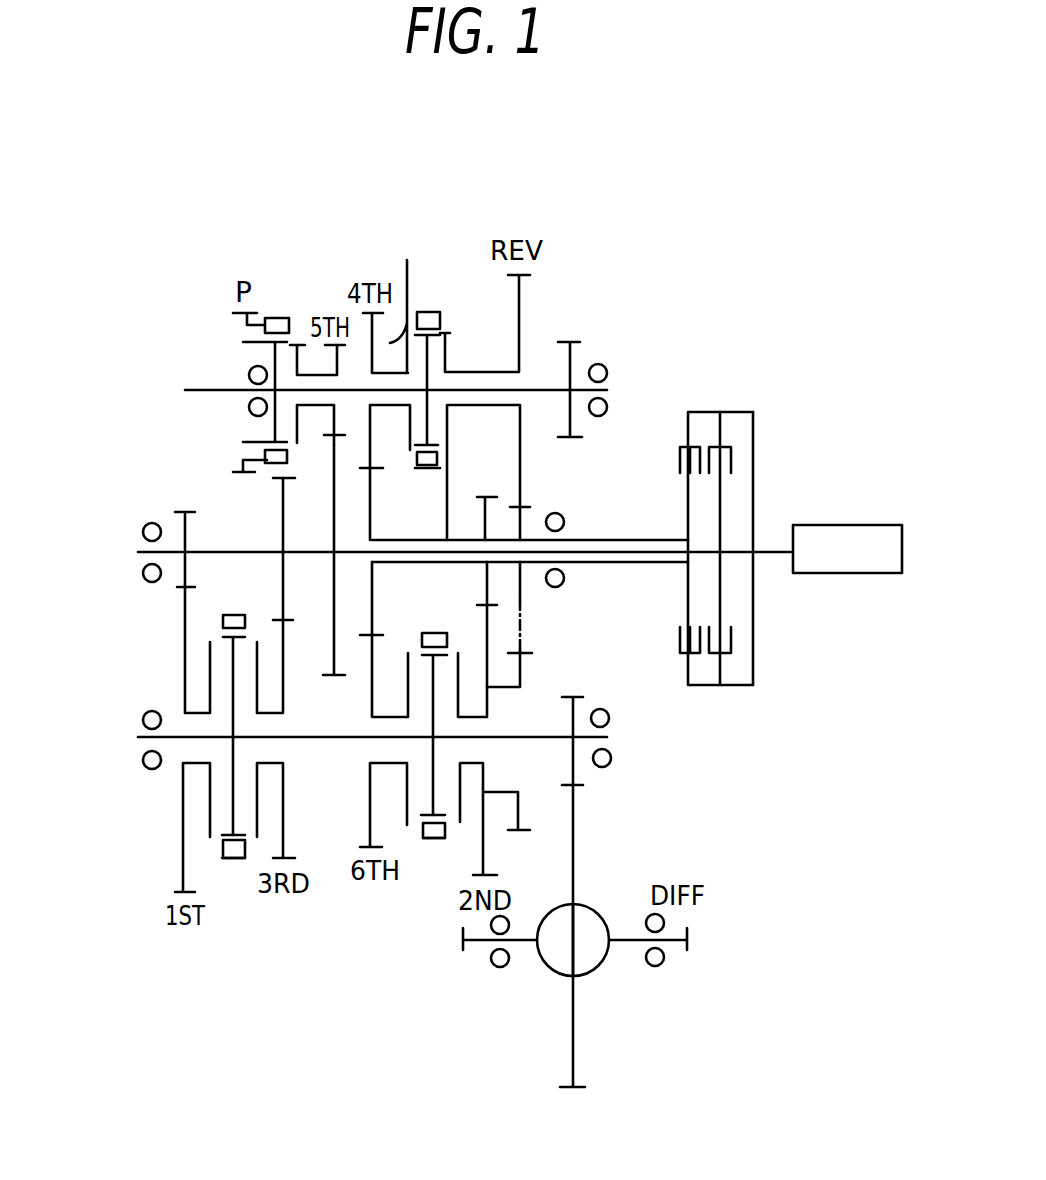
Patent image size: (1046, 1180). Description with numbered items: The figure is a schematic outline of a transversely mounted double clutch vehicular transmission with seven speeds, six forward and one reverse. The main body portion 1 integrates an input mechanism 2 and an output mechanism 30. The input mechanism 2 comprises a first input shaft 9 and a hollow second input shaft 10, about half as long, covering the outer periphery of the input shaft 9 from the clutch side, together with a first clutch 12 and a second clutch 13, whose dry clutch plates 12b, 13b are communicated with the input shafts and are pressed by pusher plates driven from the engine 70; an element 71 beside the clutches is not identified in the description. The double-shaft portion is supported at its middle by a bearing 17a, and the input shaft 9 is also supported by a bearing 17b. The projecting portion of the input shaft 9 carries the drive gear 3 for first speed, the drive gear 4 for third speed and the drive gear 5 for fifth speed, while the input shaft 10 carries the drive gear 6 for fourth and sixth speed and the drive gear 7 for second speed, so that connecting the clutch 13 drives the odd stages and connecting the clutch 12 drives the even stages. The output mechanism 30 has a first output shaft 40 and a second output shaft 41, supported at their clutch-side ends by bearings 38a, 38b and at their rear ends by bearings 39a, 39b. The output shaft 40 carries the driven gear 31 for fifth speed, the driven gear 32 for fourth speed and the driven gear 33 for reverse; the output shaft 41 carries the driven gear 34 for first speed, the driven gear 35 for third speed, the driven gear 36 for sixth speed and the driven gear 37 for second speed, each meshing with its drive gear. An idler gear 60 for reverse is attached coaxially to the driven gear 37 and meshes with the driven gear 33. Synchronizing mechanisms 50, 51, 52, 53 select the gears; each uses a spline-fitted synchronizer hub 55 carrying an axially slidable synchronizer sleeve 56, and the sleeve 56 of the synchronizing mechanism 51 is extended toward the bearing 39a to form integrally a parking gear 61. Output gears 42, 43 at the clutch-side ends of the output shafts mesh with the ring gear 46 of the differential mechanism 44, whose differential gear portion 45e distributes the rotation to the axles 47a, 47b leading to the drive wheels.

The main body portion 1 is at (133, 342).
The input mechanism 2 is at (695, 380).
The drive gear for 1st speed 3 is at (185, 578).
The drive gear for 3rd speed 4 is at (283, 568).
The drive gear for 5th speed 5 is at (334, 633).
The drive gear for 4th speed and 6th speed 6 is at (380, 498).
The drive gear for 2nd speed 7 is at (485, 523).
The input shaft 9 is at (258, 550).
The input shaft 10 is at (455, 537).
The clutch 12 is at (675, 447).
The clutch plate 12b is at (688, 507).
The clutch 13 is at (735, 435).
The clutch plate 13b is at (723, 520).
The bearing 17a is at (562, 512).
The bearing 17b is at (142, 532).
The output mechanism 30 is at (218, 261).
The driven gear for 5th speed 31 is at (330, 415).
The driven gear for 4th speed 32 is at (392, 299).
The driven gear for reverse 33 is at (523, 297).
The driven gear for 1st speed 34 is at (183, 850).
The driven gear for 3rd speed 35 is at (287, 795).
The driven gear for 6th speed 36 is at (368, 814).
The driven gear for 2nd speed 37 is at (488, 848).
The bearing 38a is at (608, 370).
The bearing 38b is at (607, 768).
The bearing 39a is at (246, 375).
The bearing 39b is at (148, 770).
The output shaft 40 is at (555, 387).
The output shaft 41 is at (557, 737).
The output gear 42 is at (577, 352).
The output gear 43 is at (577, 700).
The differential mechanism 44 is at (545, 977).
The differential gear portion 45e is at (592, 970).
The ring gear 46 is at (575, 1070).
The axle 47a is at (472, 945).
The axle 47b is at (677, 950).
The synchronizing mechanism 50 is at (428, 308).
The synchronizing mechanism 51 is at (277, 314).
The synchronizing mechanism 52 is at (232, 862).
The synchronizing mechanism 53 is at (432, 850).
The synchronizer hub 55 is at (263, 417).
The synchronizer sleeve 56 is at (289, 327).
The idler gear for reverse 60 is at (518, 673).
The parking gear 61 is at (247, 325).
The engine 70 is at (875, 525).
The clutch cover 71 is at (755, 465).